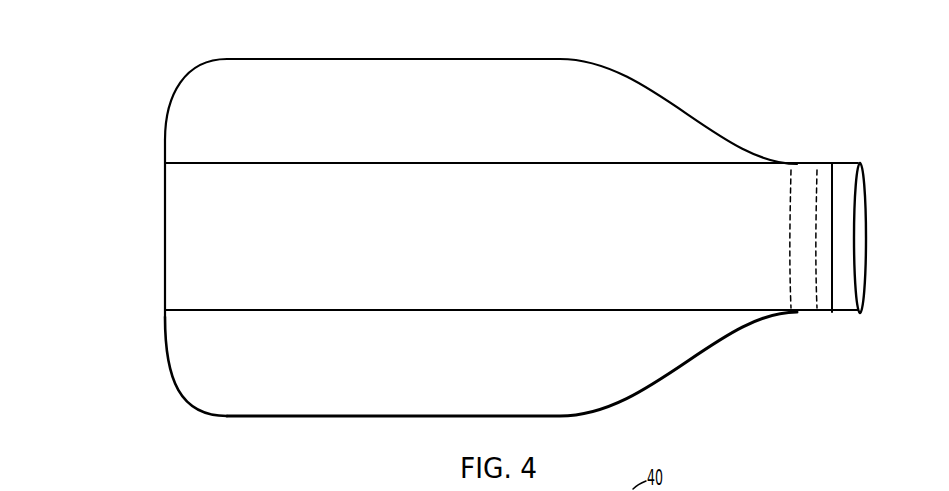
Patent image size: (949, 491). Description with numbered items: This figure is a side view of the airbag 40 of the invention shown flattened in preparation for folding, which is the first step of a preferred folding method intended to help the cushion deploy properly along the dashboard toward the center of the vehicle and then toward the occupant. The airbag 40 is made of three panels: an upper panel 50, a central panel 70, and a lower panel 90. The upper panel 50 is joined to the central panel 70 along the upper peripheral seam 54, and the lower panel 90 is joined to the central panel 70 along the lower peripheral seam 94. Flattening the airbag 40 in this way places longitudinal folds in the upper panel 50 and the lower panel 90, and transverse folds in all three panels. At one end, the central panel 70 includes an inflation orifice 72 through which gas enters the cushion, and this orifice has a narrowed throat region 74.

The airbag cushion 40 is at (745, 118).
The upper panel 50 is at (465, 72).
The upper peripheral seam 54 is at (203, 162).
The central panel 70 is at (203, 222).
The lower peripheral seam 94 is at (208, 309).
The lower panel 90 is at (640, 368).
The inflation orifice 72 is at (858, 238).
The narrowed throat region 74 is at (866, 150).